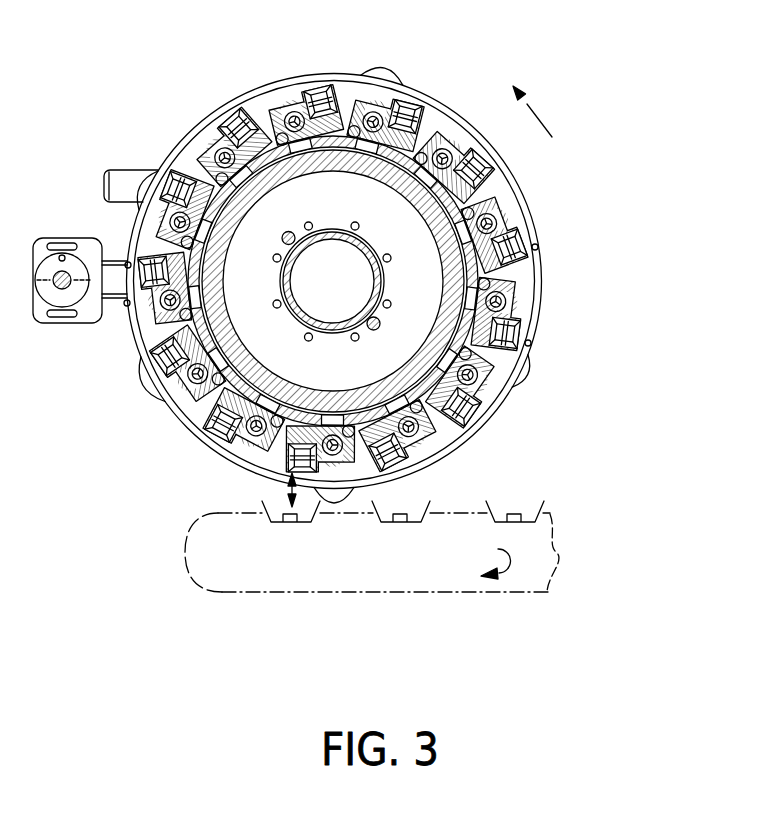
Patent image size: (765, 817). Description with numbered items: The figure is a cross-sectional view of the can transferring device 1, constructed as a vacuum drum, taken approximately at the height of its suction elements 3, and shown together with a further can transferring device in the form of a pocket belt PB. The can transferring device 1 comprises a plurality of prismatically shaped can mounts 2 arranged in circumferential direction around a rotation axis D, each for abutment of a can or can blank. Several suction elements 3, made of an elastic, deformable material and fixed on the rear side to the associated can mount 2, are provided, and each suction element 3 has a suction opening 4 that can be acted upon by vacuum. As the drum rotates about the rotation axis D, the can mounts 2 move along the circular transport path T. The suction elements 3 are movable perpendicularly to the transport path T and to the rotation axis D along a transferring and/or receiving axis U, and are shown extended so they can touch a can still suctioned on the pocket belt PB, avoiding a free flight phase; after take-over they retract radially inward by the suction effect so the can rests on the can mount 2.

The can transferring device 1 is at (512, 187).
The can mount 2 is at (338, 100).
The suction element 3 is at (324, 92).
The suction opening 4 is at (322, 90).
The rotation axis D is at (333, 282).
The transport path T is at (542, 111).
The transferring and/or receiving axis U is at (289, 490).
The pocket belt PB is at (602, 537).